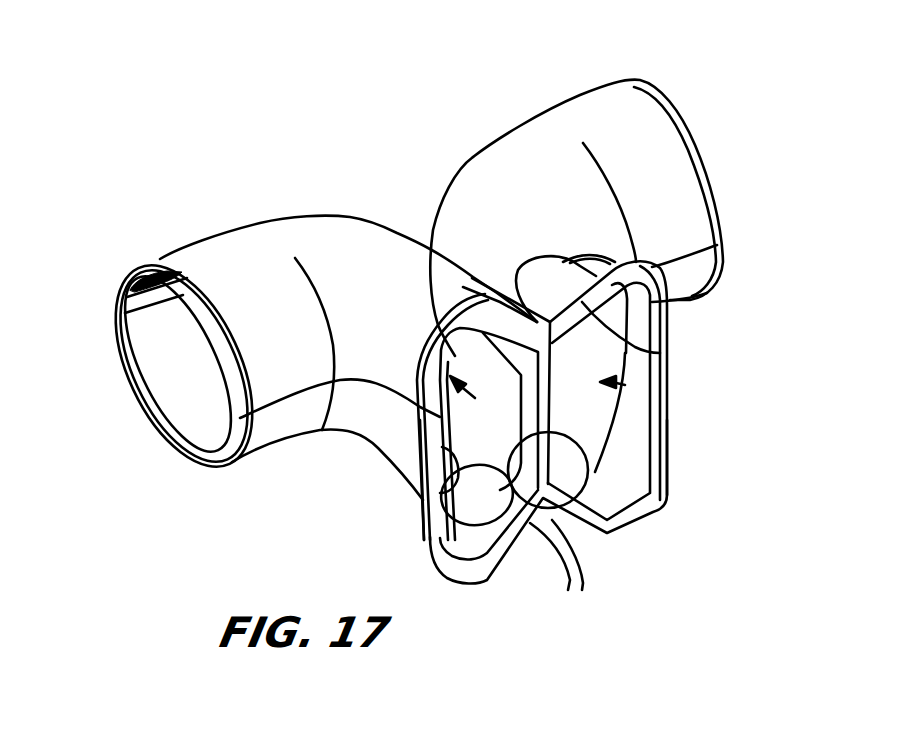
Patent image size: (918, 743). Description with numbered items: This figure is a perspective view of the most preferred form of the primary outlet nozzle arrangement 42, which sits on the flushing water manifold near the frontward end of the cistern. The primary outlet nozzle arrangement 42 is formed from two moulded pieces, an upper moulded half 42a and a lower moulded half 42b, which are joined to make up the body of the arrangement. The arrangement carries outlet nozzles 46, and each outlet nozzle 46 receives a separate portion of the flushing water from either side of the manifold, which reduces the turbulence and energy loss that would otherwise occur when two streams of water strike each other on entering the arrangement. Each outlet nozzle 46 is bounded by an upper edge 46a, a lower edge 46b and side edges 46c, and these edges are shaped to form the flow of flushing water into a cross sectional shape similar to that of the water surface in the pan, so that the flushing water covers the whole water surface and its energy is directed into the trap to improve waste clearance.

The primary outlet nozzle arrangement 42 is at (341, 129).
The upper moulded half 42a is at (140, 397).
The lower moulded half 42b is at (122, 277).
The outlet nozzle 46 is at (428, 368).
The upper edge 46a is at (417, 357).
The lower edge 46b is at (500, 517).
The side edge 46c is at (440, 501).